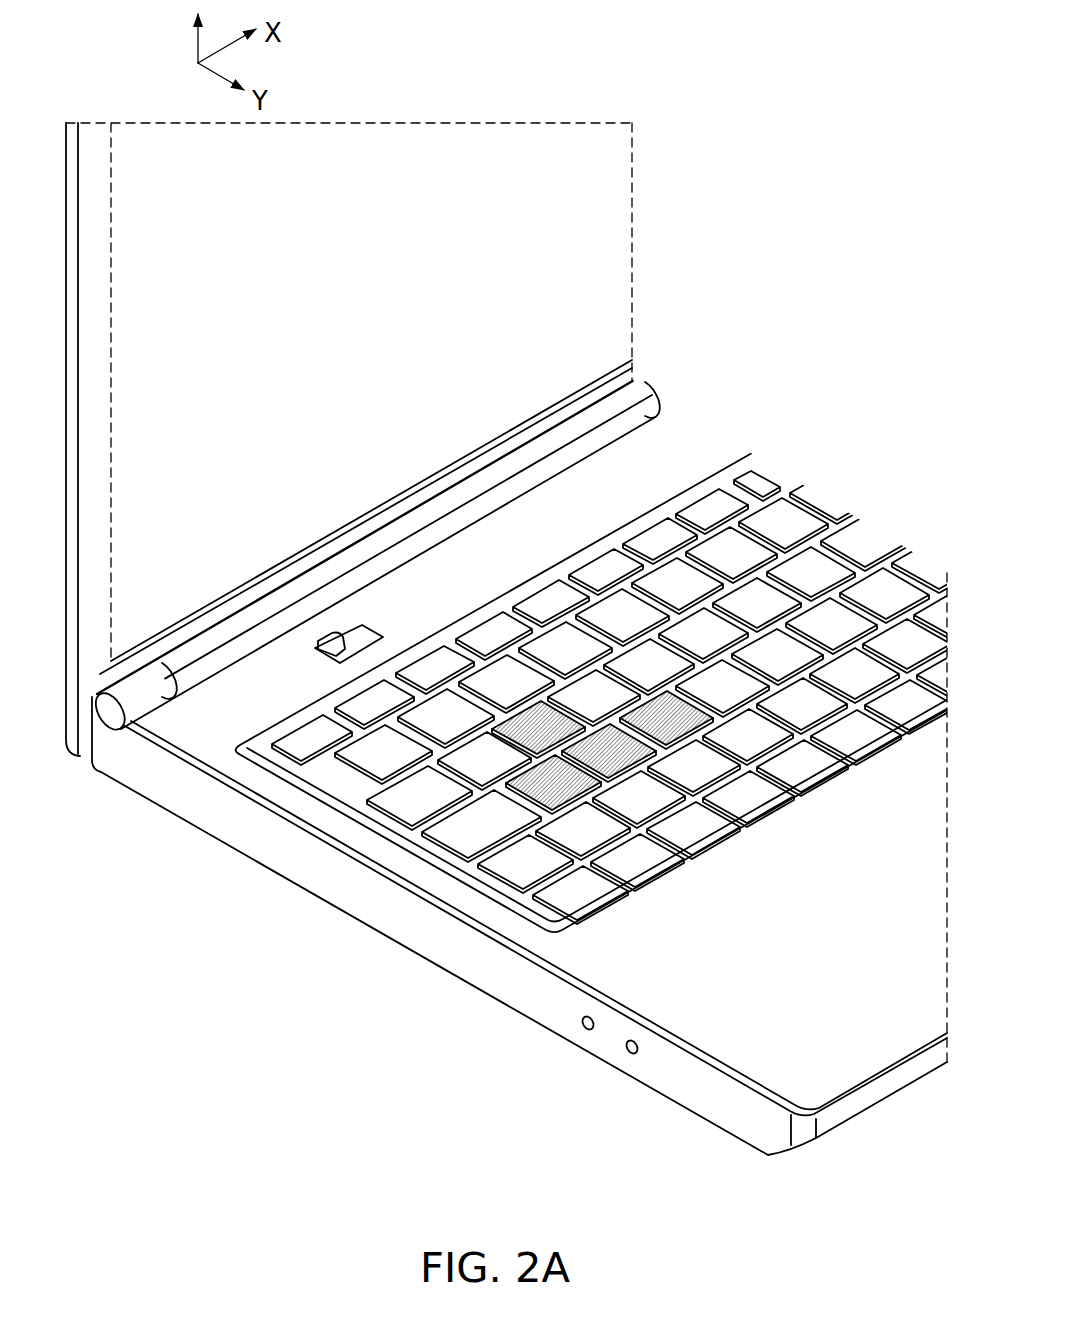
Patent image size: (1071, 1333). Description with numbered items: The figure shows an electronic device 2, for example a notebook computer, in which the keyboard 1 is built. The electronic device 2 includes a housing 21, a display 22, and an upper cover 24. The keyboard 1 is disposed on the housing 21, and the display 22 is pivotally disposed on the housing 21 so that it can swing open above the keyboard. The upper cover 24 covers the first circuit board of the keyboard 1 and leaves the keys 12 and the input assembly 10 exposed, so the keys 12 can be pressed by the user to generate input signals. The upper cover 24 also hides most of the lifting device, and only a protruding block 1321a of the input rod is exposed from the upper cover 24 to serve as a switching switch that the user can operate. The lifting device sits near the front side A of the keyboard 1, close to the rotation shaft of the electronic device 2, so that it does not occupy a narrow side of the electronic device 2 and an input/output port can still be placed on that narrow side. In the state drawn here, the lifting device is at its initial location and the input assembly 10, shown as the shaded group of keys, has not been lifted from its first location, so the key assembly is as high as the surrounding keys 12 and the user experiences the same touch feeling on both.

The electronic device 2 is at (783, 188).
The display 22 is at (130, 522).
The upper cover 24 is at (193, 732).
The housing 21 is at (338, 878).
The keyboard 1 is at (621, 692).
The keys 12 is at (620, 607).
The input assembly 10 is at (523, 718).
The front side A is at (530, 584).
The protruding block 1321a is at (318, 653).